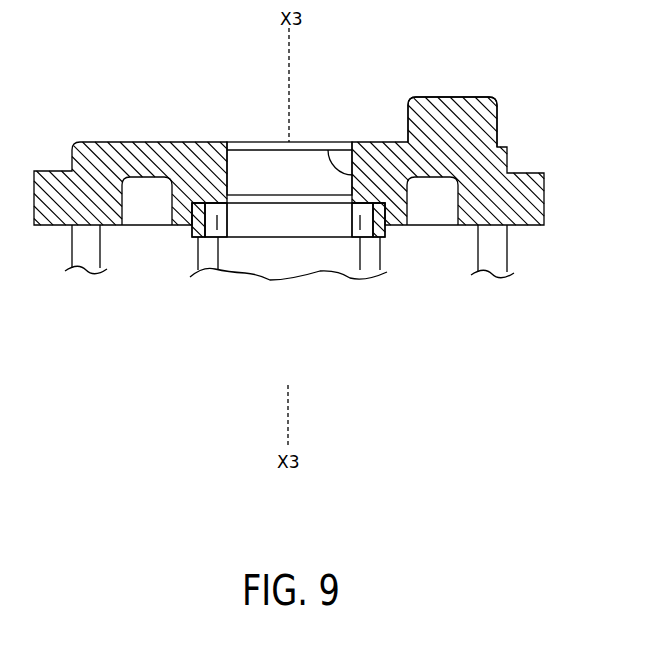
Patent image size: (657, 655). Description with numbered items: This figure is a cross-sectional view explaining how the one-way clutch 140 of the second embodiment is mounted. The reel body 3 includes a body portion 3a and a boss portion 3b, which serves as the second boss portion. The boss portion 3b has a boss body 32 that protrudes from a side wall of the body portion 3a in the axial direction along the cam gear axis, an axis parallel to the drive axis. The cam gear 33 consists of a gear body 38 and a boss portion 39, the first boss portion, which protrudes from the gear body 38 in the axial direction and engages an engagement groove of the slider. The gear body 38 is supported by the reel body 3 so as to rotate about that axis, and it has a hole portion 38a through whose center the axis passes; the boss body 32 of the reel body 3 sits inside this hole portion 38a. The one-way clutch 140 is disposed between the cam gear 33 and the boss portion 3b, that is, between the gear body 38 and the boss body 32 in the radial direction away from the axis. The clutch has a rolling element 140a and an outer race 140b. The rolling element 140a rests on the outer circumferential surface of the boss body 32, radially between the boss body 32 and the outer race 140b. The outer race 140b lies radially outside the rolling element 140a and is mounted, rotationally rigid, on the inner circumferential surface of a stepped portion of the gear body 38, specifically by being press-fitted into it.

The gear body 38 is at (289, 137).
The cam gear 33 is at (168, 142).
The boss portion 39 is at (455, 97).
The boss body 32 is at (282, 128).
The boss portion 3b is at (256, 142).
The hole portion 38a is at (341, 152).
The one-way clutch 140 is at (227, 388).
The rolling element 140a is at (217, 240).
The outer race 140b is at (195, 238).
The body portion 3a is at (294, 297).
The reel body 3 is at (85, 272).